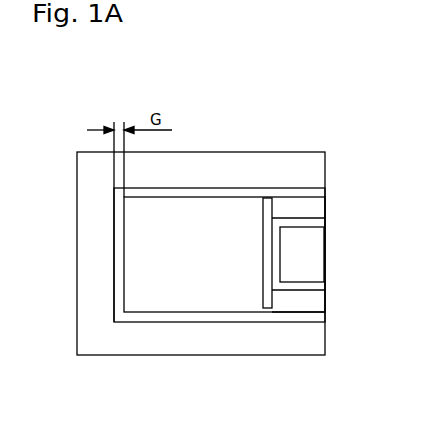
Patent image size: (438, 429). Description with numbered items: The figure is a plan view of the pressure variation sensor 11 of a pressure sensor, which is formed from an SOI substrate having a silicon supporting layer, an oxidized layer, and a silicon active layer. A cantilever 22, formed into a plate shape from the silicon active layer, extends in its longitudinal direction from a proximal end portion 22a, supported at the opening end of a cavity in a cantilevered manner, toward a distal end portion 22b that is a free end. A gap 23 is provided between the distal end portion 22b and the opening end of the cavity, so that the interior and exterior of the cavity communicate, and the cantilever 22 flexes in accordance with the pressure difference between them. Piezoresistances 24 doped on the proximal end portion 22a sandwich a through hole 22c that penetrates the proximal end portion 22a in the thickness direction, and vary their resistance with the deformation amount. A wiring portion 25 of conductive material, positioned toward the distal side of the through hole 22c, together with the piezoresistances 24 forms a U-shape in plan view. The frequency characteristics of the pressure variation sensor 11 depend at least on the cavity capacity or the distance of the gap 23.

The pressure variation sensor 11 is at (337, 133).
The cantilever 22 is at (206, 220).
The proximal end portion 22a is at (280, 303).
The distal end portion 22b is at (152, 272).
The through hole 22c is at (292, 287).
The gap 23 is at (118, 253).
The piezoresistances 24 is at (298, 207).
The wiring portion 25 is at (265, 232).